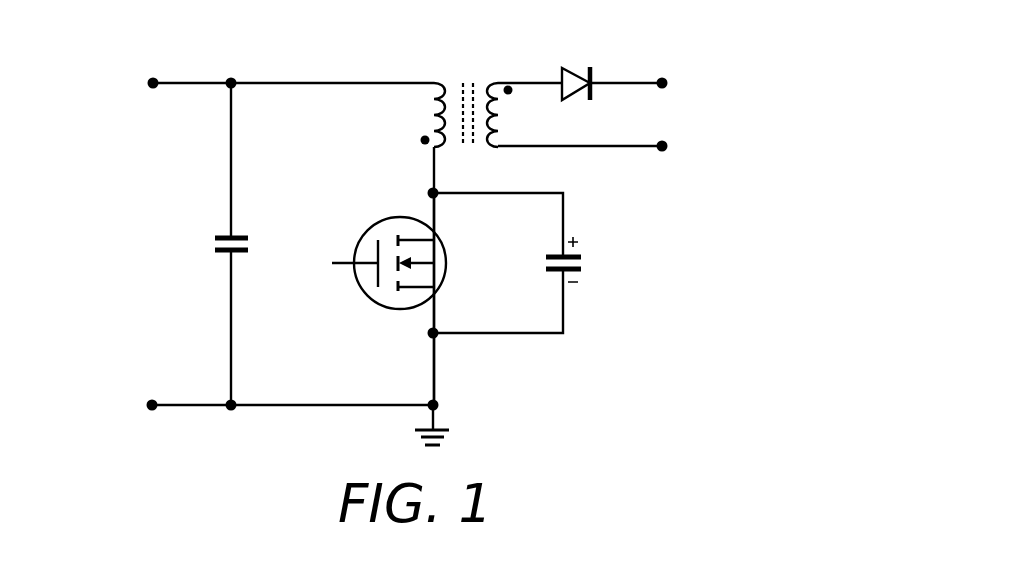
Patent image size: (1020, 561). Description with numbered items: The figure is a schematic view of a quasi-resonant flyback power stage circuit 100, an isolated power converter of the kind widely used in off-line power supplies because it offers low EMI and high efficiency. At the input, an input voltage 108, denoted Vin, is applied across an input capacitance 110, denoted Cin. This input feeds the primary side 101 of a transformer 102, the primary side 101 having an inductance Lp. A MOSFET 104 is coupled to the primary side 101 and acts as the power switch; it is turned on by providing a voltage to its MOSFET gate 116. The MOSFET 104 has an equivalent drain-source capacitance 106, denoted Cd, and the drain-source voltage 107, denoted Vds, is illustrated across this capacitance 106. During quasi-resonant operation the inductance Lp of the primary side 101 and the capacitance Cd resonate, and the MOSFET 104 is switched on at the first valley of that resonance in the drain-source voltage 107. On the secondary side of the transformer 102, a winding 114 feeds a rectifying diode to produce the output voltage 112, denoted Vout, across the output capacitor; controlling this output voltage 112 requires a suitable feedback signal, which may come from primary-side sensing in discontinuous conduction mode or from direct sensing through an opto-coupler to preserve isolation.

The quasi-resonant flyback power stage circuit 100 is at (765, 60).
The primary side 101 is at (440, 108).
The transformer 102 is at (475, 89).
The MOSFET 104 is at (400, 215).
The equivalent drain-source capacitance 106 is at (560, 252).
The drain-source voltage 107 is at (628, 261).
The input voltage 108 is at (133, 249).
The input capacitance 110 is at (232, 236).
The output voltage 112 is at (725, 118).
The secondary winding 114 is at (502, 122).
The MOSFET gate 116 is at (337, 266).